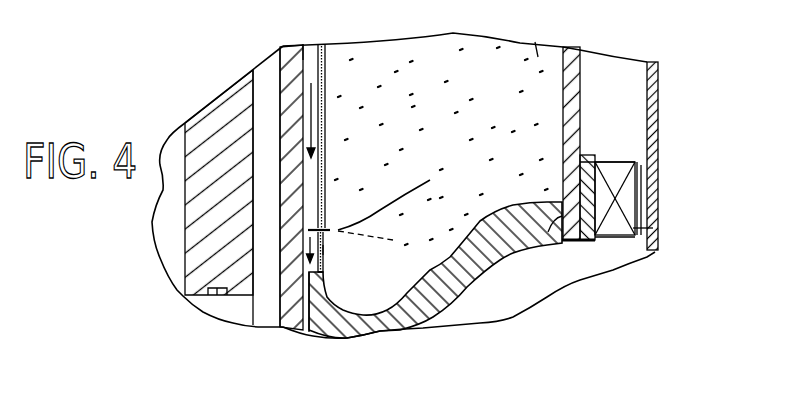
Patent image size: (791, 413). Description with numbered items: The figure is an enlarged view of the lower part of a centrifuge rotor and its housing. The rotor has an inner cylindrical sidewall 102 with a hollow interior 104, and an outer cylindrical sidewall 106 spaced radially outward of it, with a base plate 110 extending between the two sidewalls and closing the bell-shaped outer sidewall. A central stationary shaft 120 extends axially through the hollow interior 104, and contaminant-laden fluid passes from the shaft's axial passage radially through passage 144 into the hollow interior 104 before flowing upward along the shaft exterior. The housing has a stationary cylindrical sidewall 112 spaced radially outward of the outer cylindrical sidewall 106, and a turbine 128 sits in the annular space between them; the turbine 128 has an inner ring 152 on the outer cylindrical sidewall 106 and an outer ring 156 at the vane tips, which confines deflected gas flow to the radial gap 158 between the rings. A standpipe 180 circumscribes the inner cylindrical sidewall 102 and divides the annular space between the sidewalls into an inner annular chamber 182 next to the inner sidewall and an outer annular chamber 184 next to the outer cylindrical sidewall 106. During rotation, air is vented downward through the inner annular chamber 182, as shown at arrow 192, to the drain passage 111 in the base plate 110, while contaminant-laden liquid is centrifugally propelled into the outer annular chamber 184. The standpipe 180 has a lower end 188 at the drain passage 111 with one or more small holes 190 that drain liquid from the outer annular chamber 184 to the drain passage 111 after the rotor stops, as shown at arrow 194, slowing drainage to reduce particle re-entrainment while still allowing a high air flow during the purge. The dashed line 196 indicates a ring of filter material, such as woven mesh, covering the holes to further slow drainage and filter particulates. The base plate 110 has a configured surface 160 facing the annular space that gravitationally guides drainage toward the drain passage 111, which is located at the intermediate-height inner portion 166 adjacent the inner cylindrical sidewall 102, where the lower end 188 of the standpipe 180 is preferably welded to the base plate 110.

The inner cylindrical sidewall 102 is at (292, 50).
The hollow interior 104 is at (265, 318).
The outer cylindrical sidewall 106 is at (581, 80).
The base plate 110 is at (485, 270).
The drain passage 111 is at (303, 325).
The cylindrical sidewall 112 is at (660, 110).
The central stationary shaft 120 is at (215, 100).
The turbine 128 is at (620, 196).
The passage 144 is at (230, 303).
The inner ring 152 is at (604, 237).
The outer ring 156 is at (647, 228).
The radial gap 158 is at (612, 163).
The configured surface 160 is at (503, 210).
The intermediate-height inner portion 166 is at (323, 276).
The standpipe 180 is at (326, 158).
The inner annular chamber 182 is at (329, 47).
The outer annular chamber 184 is at (535, 42).
The lower end 188 is at (325, 250).
The holes 190 is at (320, 224).
The air vent arrow 192 is at (322, 117).
The liquid drain arrow 194 is at (418, 187).
The ring of filter material 196 is at (394, 240).